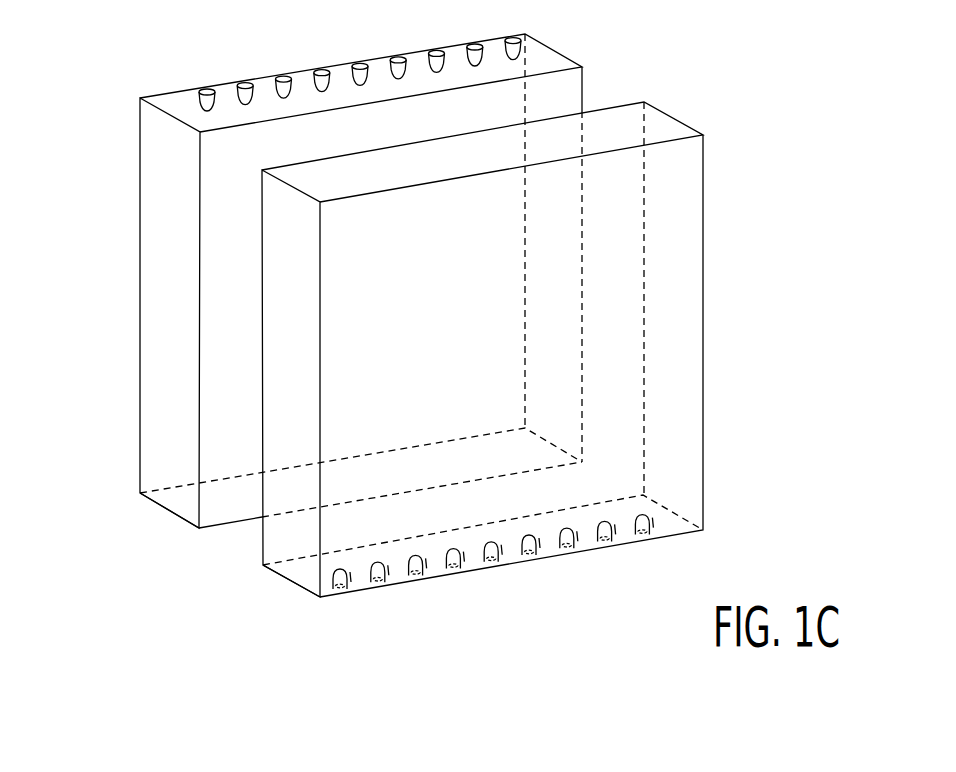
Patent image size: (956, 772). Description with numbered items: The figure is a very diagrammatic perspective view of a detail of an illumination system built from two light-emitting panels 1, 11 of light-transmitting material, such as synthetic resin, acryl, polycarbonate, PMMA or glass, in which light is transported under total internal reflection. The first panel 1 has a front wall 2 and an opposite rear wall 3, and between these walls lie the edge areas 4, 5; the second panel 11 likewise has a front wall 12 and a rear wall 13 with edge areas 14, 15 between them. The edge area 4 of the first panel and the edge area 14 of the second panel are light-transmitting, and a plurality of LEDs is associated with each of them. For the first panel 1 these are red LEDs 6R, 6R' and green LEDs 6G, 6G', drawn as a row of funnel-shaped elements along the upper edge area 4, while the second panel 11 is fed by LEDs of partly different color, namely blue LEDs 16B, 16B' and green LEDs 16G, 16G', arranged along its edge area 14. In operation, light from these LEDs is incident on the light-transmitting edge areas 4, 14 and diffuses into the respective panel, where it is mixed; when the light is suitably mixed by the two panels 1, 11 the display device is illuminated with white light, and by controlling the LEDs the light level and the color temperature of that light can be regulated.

The light-emitting panel 1 is at (124, 377).
The front wall 2 is at (567, 82).
The rear wall 3 is at (166, 172).
The light-transmitting edge area 4 is at (549, 60).
The edge area 5 is at (185, 494).
The red LED 6R is at (198, 72).
The green LED 6G is at (235, 67).
The red LED 6R' is at (274, 60).
The green LED 6G' is at (311, 55).
The light-emitting panel 11 is at (718, 382).
The front wall 12 is at (693, 197).
The rear wall 13 is at (289, 222).
The light-transmitting edge area 14 is at (661, 514).
The edge area 15 is at (673, 125).
The blue LED 16B is at (352, 606).
The green LED 16G is at (394, 600).
The blue LED 16B' is at (439, 592).
The green LED 16G' is at (479, 587).